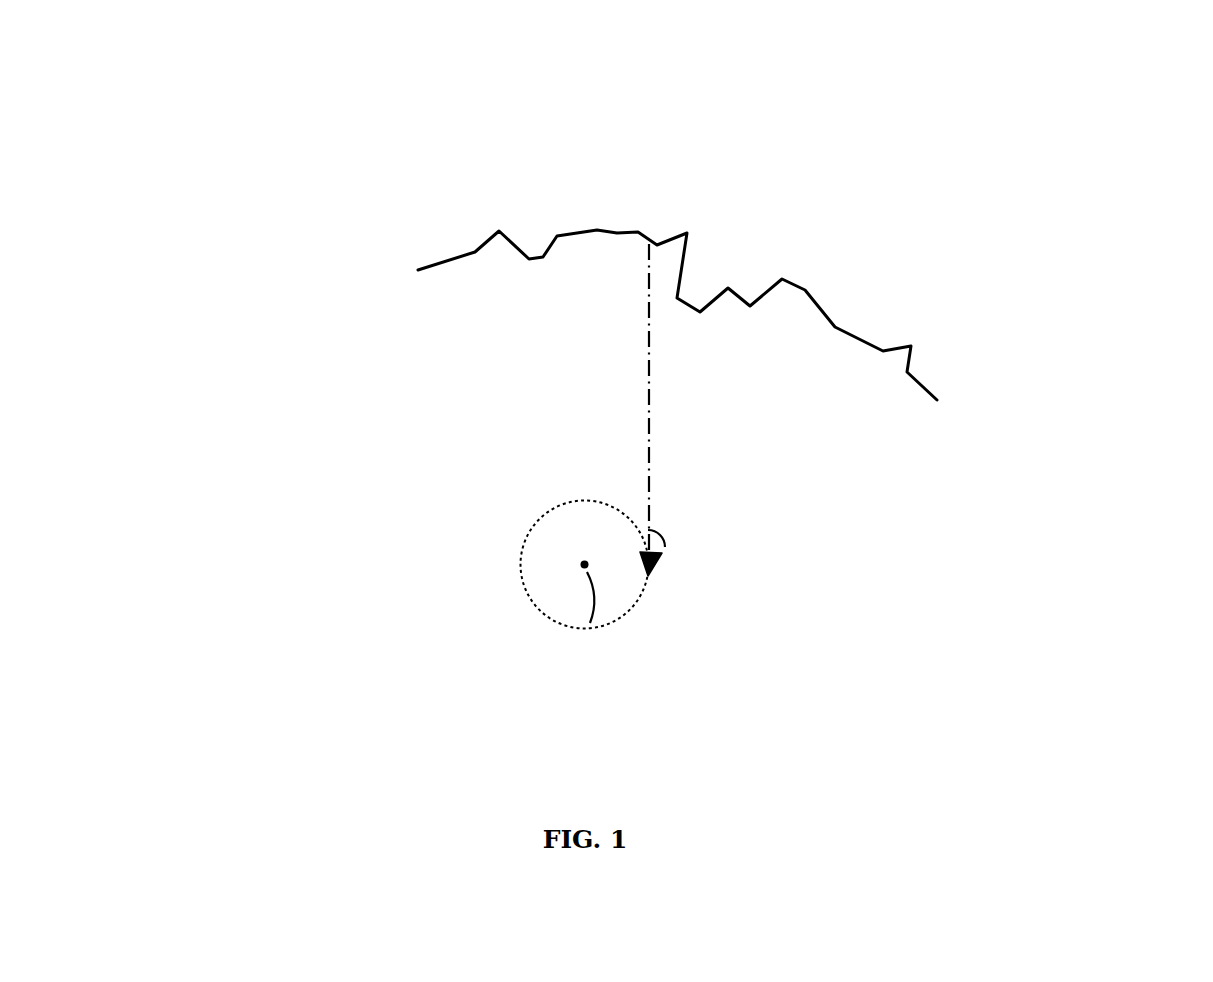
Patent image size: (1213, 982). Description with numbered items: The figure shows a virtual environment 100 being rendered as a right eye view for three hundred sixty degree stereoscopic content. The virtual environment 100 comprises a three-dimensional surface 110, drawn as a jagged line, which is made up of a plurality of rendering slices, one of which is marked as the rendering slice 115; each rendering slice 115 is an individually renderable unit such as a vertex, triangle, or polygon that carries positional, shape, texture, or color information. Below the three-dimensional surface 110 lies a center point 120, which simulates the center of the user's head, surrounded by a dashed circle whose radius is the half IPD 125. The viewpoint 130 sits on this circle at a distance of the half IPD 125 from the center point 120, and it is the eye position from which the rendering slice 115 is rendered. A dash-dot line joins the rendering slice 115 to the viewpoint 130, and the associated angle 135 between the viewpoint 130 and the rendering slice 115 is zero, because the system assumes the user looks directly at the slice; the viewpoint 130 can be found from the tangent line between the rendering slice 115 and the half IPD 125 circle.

The virtual environment 100 is at (1172, 40).
The 3D surface 110 is at (433, 250).
The rendering slice 115 is at (655, 233).
The center point 120 is at (573, 564).
The half IPD 125 is at (592, 610).
The viewpoint 130 is at (658, 563).
The associated angle 135 is at (668, 538).